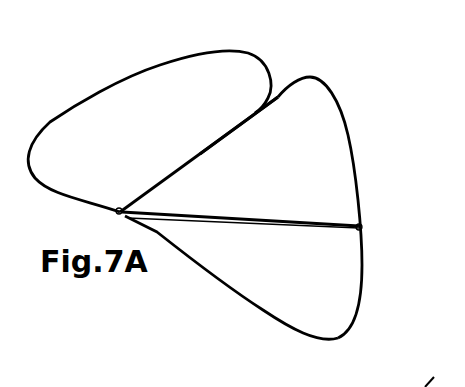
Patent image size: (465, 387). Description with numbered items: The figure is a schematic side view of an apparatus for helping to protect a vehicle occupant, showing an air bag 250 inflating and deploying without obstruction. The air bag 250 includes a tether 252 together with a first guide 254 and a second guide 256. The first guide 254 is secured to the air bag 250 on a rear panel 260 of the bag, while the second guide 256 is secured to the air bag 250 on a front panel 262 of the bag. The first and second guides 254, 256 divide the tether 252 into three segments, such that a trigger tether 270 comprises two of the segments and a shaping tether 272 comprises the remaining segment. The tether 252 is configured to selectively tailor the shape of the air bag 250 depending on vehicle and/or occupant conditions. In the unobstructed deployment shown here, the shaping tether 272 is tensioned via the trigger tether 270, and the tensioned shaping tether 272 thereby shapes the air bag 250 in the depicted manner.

The air bag 250 is at (160, 63).
The tether 252 is at (192, 159).
The first guide 254 is at (117, 207).
The second guide 256 is at (356, 225).
The rear panel 260 is at (200, 275).
The front panel 262 is at (364, 258).
The trigger tether 270 is at (225, 218).
The shaping tether 272 is at (226, 134).